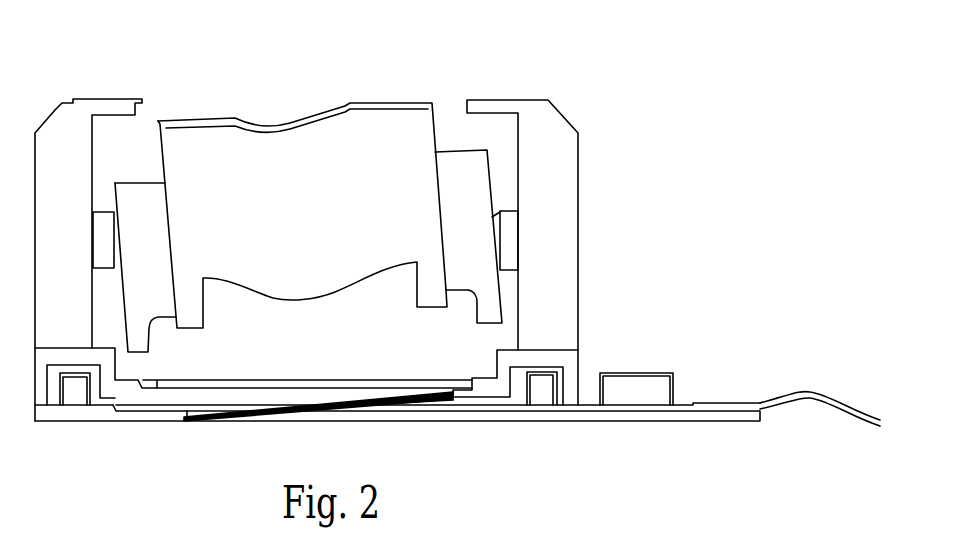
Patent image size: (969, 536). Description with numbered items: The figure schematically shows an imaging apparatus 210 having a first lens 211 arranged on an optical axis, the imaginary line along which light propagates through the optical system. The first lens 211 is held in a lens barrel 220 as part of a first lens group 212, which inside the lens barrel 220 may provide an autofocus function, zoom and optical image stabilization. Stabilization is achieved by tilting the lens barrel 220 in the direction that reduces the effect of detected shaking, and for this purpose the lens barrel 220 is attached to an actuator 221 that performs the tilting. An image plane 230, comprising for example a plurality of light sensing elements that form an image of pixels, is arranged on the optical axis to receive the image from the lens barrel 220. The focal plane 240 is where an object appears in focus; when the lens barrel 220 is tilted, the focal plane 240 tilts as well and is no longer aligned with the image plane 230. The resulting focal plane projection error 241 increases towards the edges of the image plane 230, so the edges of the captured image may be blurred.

The imaging apparatus 210 is at (548, 205).
The first lens 211 is at (270, 127).
The first lens group 212 is at (375, 185).
The lens barrel 220 is at (143, 190).
The actuator 221 is at (93, 212).
The image plane 230 is at (400, 410).
The focal plane 240 is at (225, 410).
The focal plane projection error 241 is at (432, 395).